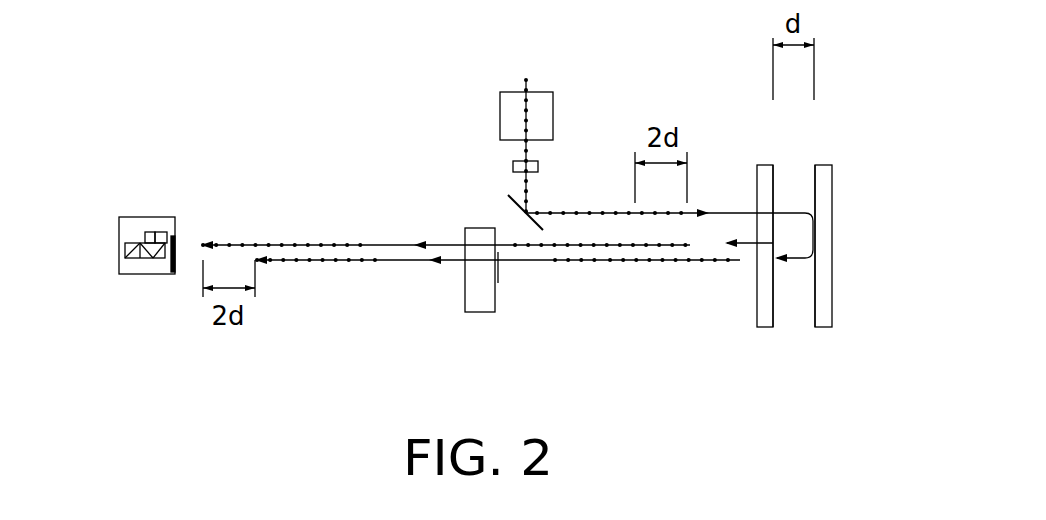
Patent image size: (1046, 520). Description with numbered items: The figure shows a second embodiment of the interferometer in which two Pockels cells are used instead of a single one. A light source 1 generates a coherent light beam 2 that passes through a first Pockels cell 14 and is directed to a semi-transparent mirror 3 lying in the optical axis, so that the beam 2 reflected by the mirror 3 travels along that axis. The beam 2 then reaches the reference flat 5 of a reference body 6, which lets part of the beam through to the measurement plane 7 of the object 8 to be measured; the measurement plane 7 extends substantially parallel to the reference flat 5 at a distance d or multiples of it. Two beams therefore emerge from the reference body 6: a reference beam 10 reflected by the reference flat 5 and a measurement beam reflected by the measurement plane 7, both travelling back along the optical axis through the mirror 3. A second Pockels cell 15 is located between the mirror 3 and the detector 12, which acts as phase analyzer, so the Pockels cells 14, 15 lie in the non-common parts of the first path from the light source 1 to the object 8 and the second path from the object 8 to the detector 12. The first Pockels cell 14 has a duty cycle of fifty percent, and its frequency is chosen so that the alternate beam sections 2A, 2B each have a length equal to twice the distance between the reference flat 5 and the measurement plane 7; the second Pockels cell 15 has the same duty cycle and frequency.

The light source 1 is at (540, 105).
The coherent light beam 2 is at (528, 155).
The alternate section of the beam 2A is at (603, 272).
The alternate section of the beam 2B is at (553, 272).
The mirror 3 is at (513, 206).
The reference flat 5 is at (780, 177).
The reference body 6 is at (765, 322).
The measurement plane 7 is at (807, 168).
The object to be measured 8 is at (823, 315).
The reference beam 10 is at (731, 247).
The detector 12 is at (140, 270).
The first Pockels cell 14 is at (513, 166).
The second Pockels cell 15 is at (480, 303).